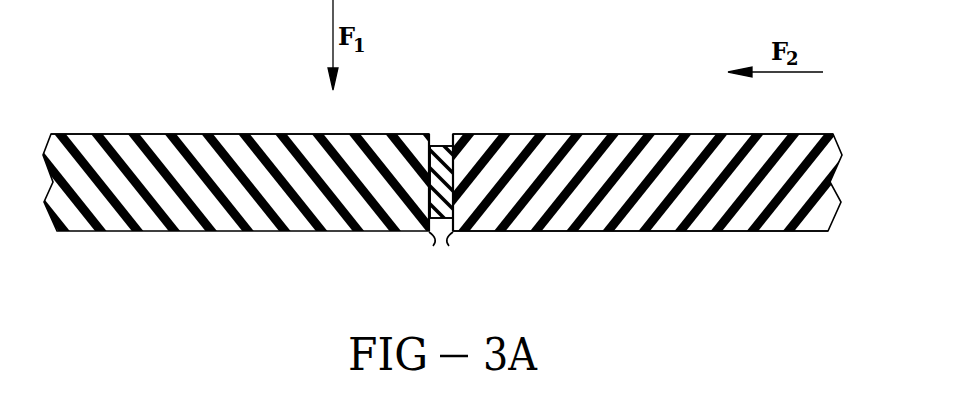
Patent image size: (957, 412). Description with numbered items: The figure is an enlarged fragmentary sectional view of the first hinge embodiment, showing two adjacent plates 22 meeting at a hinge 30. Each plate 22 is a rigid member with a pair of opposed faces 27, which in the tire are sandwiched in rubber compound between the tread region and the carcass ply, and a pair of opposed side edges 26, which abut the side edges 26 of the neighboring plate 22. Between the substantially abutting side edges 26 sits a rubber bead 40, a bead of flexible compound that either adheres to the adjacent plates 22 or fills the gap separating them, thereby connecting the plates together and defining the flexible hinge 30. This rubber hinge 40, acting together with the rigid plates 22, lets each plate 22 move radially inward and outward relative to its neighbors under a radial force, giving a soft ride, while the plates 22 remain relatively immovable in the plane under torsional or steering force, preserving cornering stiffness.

The plate 22 is at (161, 222).
The side edge 26 is at (433, 246).
The face 27 is at (181, 134).
The hinge 30 is at (445, 113).
The rubber bead 40 is at (446, 144).